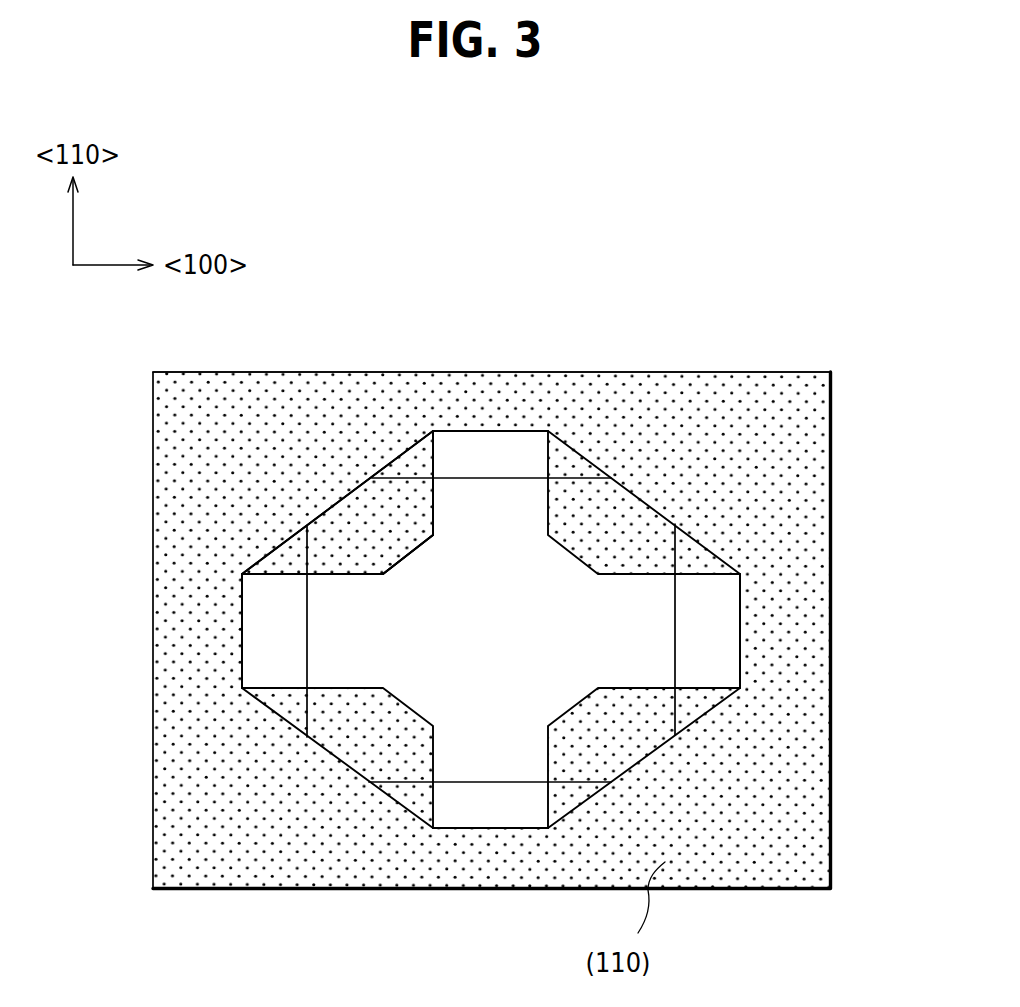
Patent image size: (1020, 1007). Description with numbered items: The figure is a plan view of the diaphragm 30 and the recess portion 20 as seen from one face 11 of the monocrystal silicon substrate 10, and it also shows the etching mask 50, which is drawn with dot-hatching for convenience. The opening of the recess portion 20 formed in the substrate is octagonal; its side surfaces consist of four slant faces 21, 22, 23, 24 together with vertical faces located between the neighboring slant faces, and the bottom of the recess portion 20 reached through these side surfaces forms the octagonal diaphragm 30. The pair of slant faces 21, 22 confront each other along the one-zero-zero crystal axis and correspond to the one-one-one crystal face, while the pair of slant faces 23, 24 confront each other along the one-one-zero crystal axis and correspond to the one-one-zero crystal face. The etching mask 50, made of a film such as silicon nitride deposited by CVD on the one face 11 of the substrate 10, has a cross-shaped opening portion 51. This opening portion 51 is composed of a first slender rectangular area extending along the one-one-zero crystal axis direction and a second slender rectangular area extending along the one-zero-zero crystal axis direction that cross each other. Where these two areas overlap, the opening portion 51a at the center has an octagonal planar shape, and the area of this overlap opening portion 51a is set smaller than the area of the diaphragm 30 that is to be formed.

The monocrystal silicon substrate 10 is at (718, 368).
The one face 11 is at (778, 837).
The recess portion 20 is at (342, 765).
The slant face 21 is at (262, 618).
The slant face 22 is at (710, 627).
The slant face 23 is at (488, 462).
The slant face 24 is at (500, 808).
The diaphragm 30 is at (475, 690).
The etching mask 50 is at (316, 423).
The opening portion 51 is at (351, 605).
The opening portion of the overlap area 51a is at (407, 557).